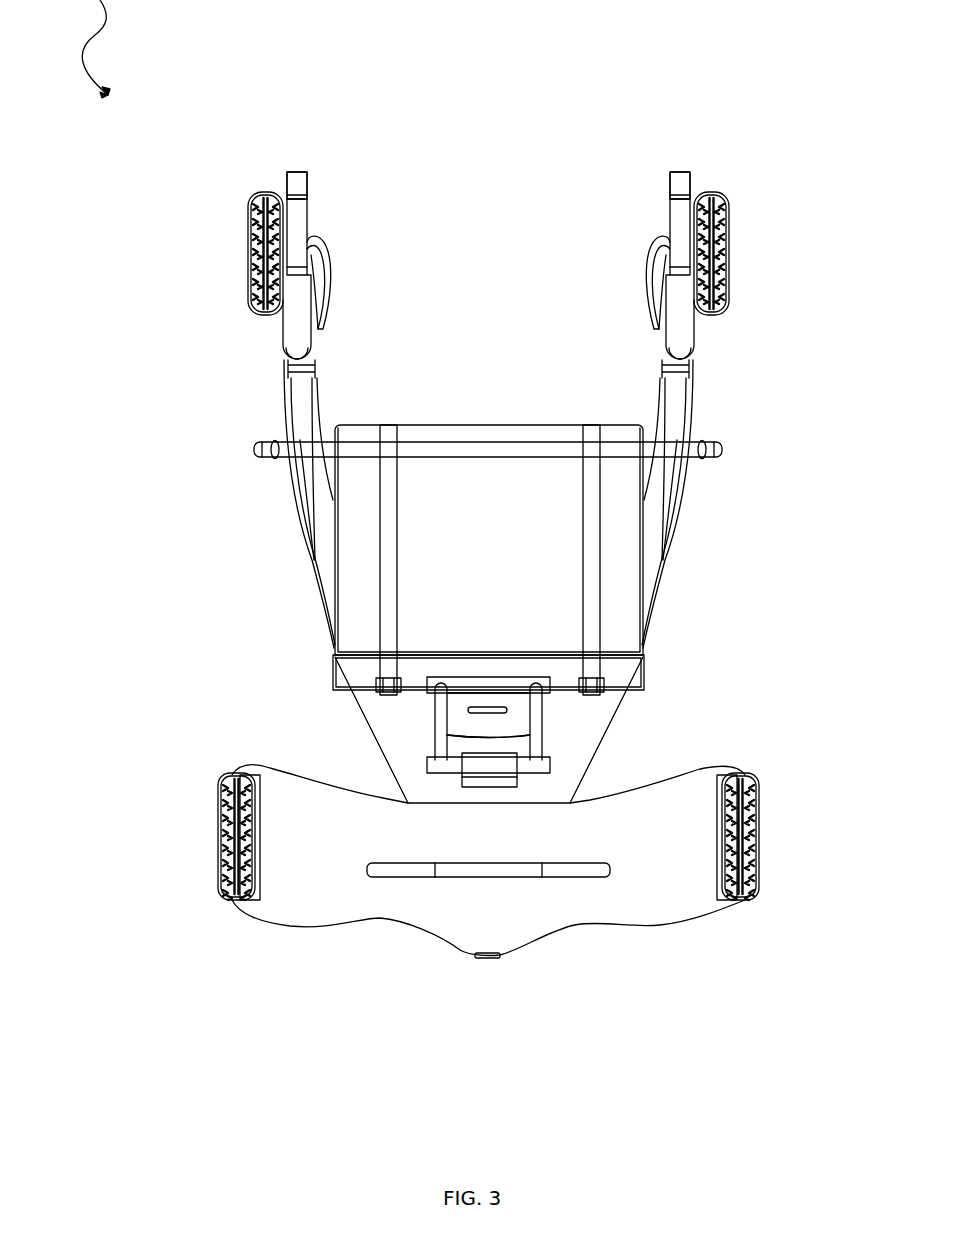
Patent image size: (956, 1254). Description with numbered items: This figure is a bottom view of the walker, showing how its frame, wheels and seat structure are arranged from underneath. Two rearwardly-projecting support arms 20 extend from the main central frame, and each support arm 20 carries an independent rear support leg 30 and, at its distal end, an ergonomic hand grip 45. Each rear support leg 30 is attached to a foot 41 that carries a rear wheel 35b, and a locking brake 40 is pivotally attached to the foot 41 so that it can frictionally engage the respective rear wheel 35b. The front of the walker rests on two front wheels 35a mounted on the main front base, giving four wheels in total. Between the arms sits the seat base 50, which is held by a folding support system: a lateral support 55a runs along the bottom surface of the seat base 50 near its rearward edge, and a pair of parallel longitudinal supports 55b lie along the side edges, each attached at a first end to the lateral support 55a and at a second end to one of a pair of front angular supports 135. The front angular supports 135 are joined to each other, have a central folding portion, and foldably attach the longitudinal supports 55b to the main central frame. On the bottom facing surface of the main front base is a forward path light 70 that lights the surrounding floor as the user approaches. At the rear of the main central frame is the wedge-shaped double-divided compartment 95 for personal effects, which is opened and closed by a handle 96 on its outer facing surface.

The support arm 20 is at (305, 525).
The rear support leg 30 is at (295, 310).
The front wheel 35a is at (230, 893).
The rear wheel 35b is at (250, 297).
The locking brake 40 is at (298, 183).
The foot 41 is at (302, 215).
The ergonomic hand grip 45 is at (322, 255).
The seat base 50 is at (515, 570).
The lateral support 55a is at (728, 448).
The longitudinal support 55b is at (385, 622).
The forward path light 70 is at (417, 877).
The double-divided compartment 95 is at (502, 723).
The handle 96 is at (507, 708).
The front angular support 135 is at (443, 720).